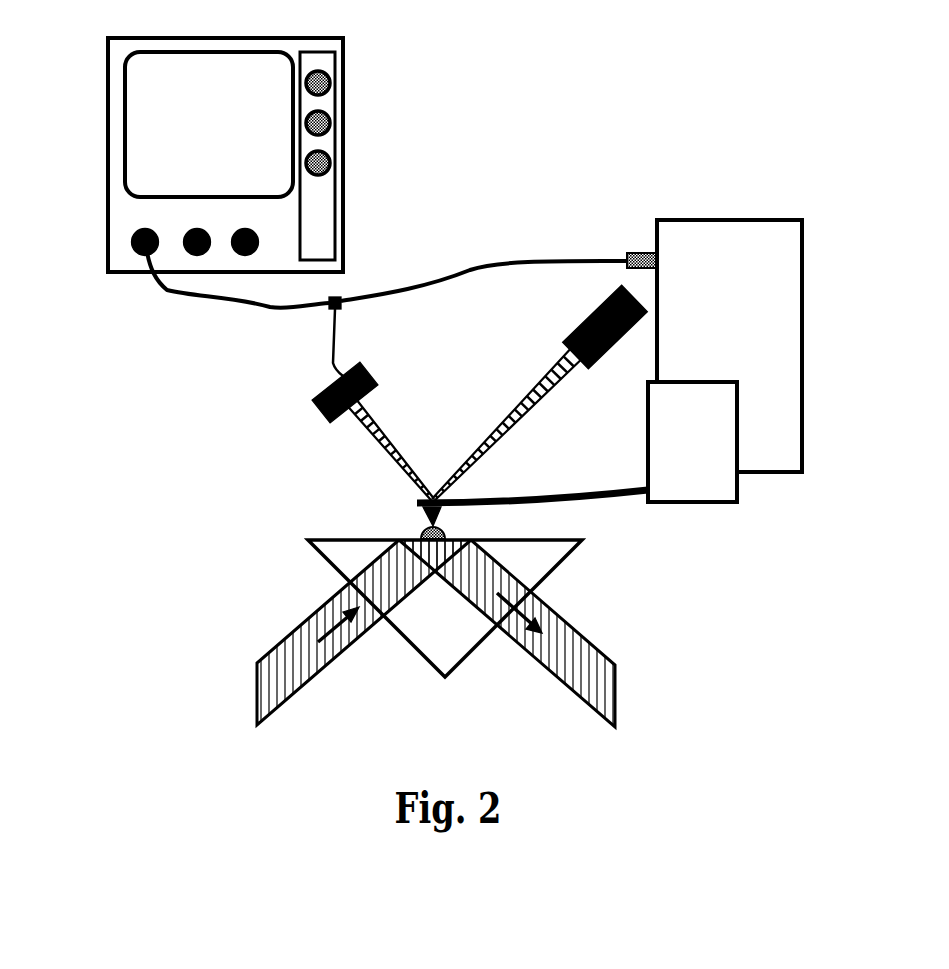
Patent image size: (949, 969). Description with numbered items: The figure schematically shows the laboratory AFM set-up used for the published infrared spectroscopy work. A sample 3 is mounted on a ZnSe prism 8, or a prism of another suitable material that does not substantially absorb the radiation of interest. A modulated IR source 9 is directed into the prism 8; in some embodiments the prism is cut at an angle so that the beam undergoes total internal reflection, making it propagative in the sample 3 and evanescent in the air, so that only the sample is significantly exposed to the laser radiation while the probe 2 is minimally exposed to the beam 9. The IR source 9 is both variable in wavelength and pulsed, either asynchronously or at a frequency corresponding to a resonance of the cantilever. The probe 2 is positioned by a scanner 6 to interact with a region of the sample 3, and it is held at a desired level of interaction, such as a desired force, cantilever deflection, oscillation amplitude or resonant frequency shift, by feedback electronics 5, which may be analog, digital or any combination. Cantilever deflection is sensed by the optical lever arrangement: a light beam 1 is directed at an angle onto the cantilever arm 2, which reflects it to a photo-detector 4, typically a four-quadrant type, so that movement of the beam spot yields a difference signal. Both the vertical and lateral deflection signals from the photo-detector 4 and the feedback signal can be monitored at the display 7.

The light beam 1 is at (585, 308).
The cantilever arm 2 is at (610, 503).
The sample 3 is at (308, 407).
The photo-detector 4 is at (449, 530).
The feedback electronics 5 is at (793, 280).
The scanner 6 is at (728, 508).
The monitor 7 is at (355, 158).
The ZnSe prism 8 is at (305, 547).
The modulated IR source 9 is at (255, 682).